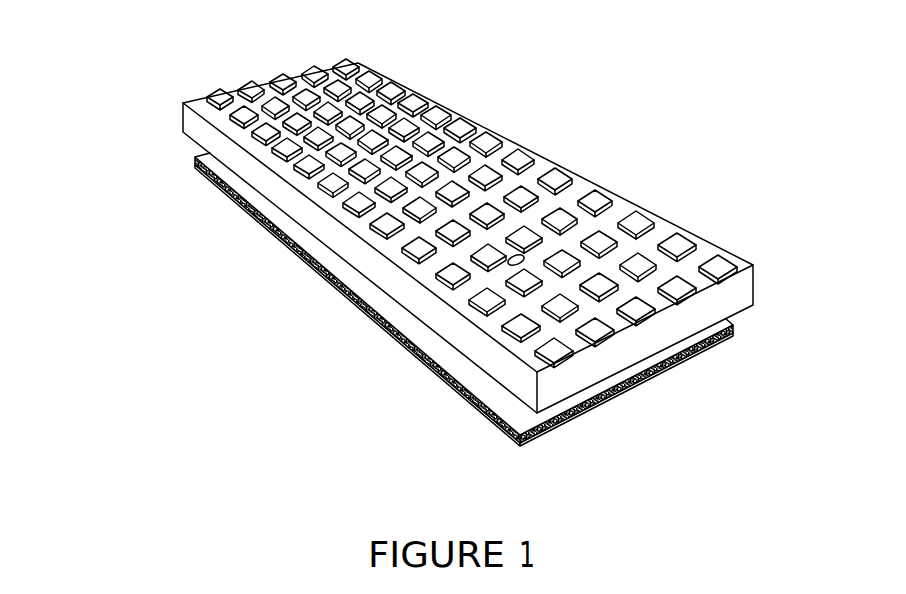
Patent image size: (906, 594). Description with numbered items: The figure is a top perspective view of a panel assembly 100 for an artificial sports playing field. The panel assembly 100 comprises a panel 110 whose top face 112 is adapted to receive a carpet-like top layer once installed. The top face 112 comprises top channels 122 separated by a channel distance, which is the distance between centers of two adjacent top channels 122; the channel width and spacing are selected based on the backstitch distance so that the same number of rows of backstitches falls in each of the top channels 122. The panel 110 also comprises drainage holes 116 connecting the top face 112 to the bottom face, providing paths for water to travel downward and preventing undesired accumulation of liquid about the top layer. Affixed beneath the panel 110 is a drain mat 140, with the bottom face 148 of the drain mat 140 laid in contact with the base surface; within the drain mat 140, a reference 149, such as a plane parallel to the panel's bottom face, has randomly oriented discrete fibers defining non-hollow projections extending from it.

The panel assembly 100 is at (169, 72).
The panel 110 is at (740, 313).
The top face 112 is at (558, 185).
The drainage holes 116 is at (507, 264).
The top channels 122 is at (232, 131).
The drain mat 140 is at (540, 421).
The bottom face of the drain mat 148 is at (456, 389).
The reference plane 149 is at (464, 305).